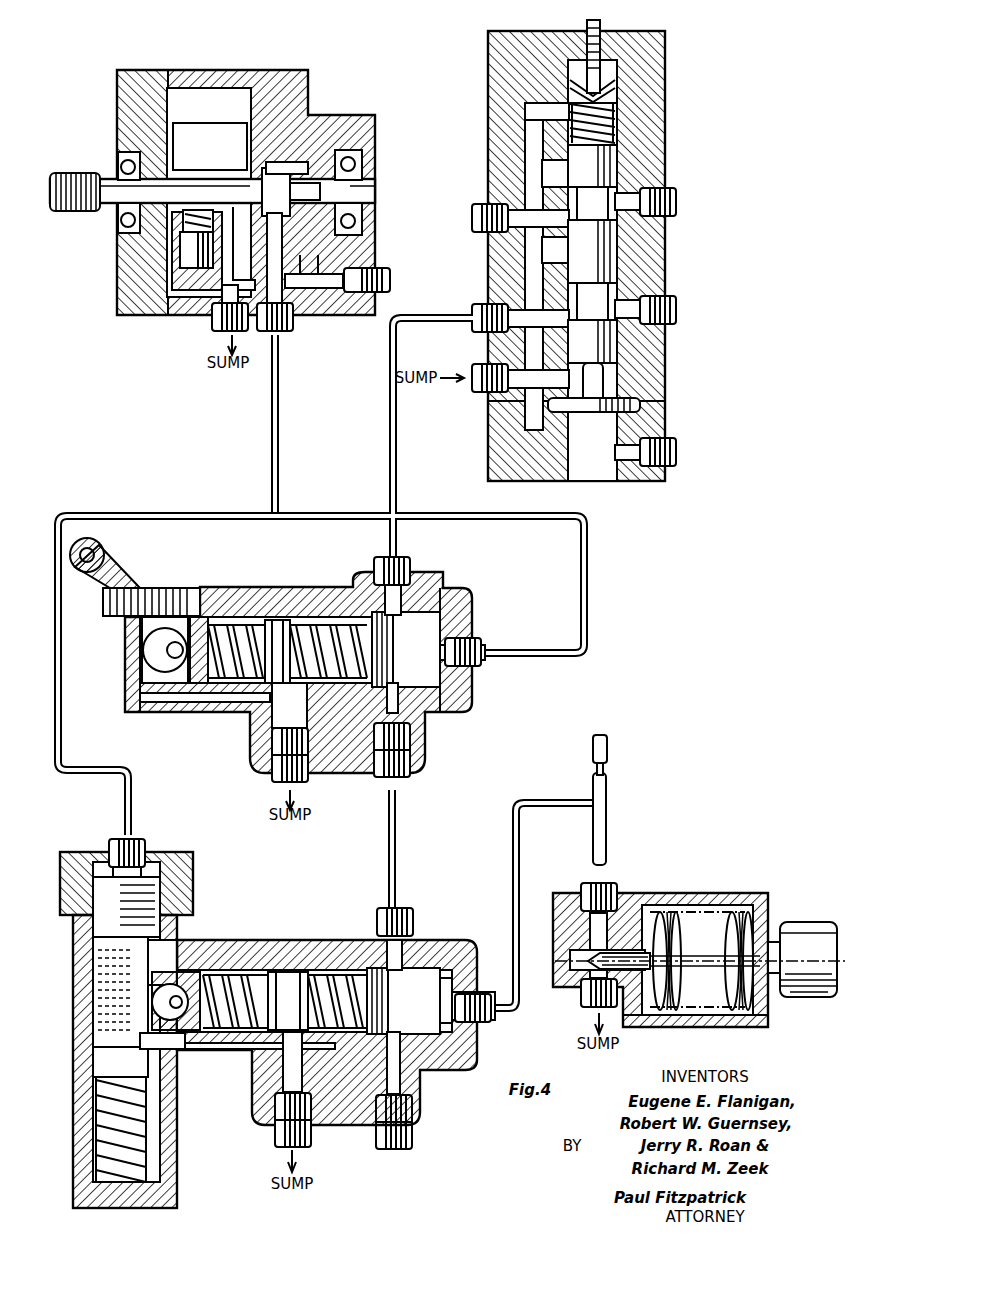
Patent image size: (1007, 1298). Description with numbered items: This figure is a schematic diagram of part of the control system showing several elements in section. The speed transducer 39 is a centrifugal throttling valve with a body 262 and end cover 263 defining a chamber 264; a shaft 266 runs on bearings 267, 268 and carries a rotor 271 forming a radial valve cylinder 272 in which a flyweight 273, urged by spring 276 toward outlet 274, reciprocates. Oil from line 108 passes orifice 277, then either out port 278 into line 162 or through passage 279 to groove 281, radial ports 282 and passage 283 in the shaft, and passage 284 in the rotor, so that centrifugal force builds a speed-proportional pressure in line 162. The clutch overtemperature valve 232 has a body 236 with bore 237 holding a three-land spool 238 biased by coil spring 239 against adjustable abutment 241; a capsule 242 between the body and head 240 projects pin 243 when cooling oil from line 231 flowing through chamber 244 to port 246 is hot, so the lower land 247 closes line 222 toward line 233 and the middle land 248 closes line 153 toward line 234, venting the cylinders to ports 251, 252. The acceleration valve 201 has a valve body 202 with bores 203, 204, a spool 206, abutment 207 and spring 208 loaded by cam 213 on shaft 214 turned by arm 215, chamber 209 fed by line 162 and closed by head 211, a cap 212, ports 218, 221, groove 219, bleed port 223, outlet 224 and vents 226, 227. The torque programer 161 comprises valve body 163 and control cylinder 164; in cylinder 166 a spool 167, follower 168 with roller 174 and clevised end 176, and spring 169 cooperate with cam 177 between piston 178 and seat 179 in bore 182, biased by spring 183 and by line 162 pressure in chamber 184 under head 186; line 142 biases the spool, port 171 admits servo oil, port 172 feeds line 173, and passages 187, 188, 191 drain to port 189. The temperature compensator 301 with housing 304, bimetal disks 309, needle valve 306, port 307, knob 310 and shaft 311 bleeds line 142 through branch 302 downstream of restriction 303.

The speed transducer 39 is at (146, 61).
The body 262 is at (117, 118).
The end cover 263 is at (312, 90).
The chamber 264 is at (203, 100).
The rotor 271 is at (238, 123).
The radial valve cylinder 272 is at (172, 272).
The cylindrical plug or flyweight 273 is at (185, 250).
The compression spring 276 is at (186, 180).
The passage 284 is at (242, 243).
The shaft 266 is at (113, 182).
The bearing 267 is at (120, 218).
The bearing 268 is at (356, 165).
The passage 283 is at (256, 182).
The groove 281 is at (292, 164).
The radial ports 282 is at (298, 195).
The port 278 is at (282, 302).
The outlet 274 is at (228, 286).
The orifice 277 is at (322, 288).
The passage 279 is at (282, 262).
The line 108 is at (370, 268).
The clutch overtemperature valve 232 is at (653, 92).
The body 236 is at (660, 250).
The head 240 is at (488, 470).
The chamber 244 is at (600, 462).
The port 252 is at (533, 170).
The port 251 is at (533, 265).
The brake energizing oil line 153 is at (472, 220).
The port 246 is at (470, 393).
The line 234 is at (679, 202).
The line 233 is at (679, 302).
The line 231 is at (679, 452).
The bore 237 is at (602, 64).
The adjustable abutment 241 is at (582, 68).
The coil spring 239 is at (617, 112).
The three-land spool 238 is at (617, 160).
The middle land 248 is at (617, 240).
The lower land 247 is at (617, 340).
The pin 243 is at (604, 378).
The oil temperature responsive capsule 242 is at (626, 412).
The line 222 is at (388, 405).
The line 162 is at (270, 432).
The acceleration valve 201 is at (226, 587).
The valve body 202 is at (301, 587).
The head or cap 212 is at (125, 690).
The head 211 is at (472, 700).
The passage 226 is at (150, 700).
The eccentric or cam 213 is at (160, 640).
The shaft 214 is at (176, 658).
The arm 215 is at (101, 561).
The spring abutment 207 is at (199, 688).
The compression spring 208 is at (240, 688).
The bore 203 is at (278, 620).
The second bore 204 is at (326, 620).
The groove 219 is at (383, 618).
The valve spool 206 is at (420, 600).
The port 221 is at (402, 568).
The chamber 209 is at (460, 632).
The outlet 224 is at (303, 722).
The passage 227 is at (262, 725).
The bleed port 223 is at (398, 692).
The port 218 is at (410, 742).
The line 173 is at (387, 843).
The line 142 is at (511, 843).
The control cylinder 164 is at (74, 1080).
The head 186 is at (184, 872).
The chamber 184 is at (110, 862).
The piston 178 is at (95, 925).
The clevised end 176 is at (95, 965).
The bore 182 is at (92, 1010).
The cam 177 is at (180, 945).
The guide and spring seat 179 is at (98, 1121).
The compression spring 183 is at (98, 1160).
The torque programer 161 is at (296, 930).
The valve body 163 is at (326, 940).
The passage 188 is at (240, 1049).
The passage 187 is at (160, 1050).
The follower roller 174 is at (180, 1032).
The cylinder 166 is at (272, 973).
The cam follower 168 is at (230, 962).
The compression spring 169 is at (300, 970).
The servo oil control spool 167 is at (427, 965).
The outlet port 172 is at (380, 920).
The clutch cylinder drain passage 191 is at (333, 1055).
The port 189 is at (275, 1125).
The port 171 is at (400, 1060).
The temperature compensator 301 is at (688, 886).
The dished bimetal disks 309 is at (715, 905).
The body or housing 304 is at (725, 1027).
The needle valve 306 is at (624, 912).
The outlet or sump port 307 is at (584, 995).
The shaft 311 is at (760, 1003).
The rotatable knob 310 is at (808, 924).
The branch line 302 is at (607, 830).
The restriction 303 is at (604, 770).